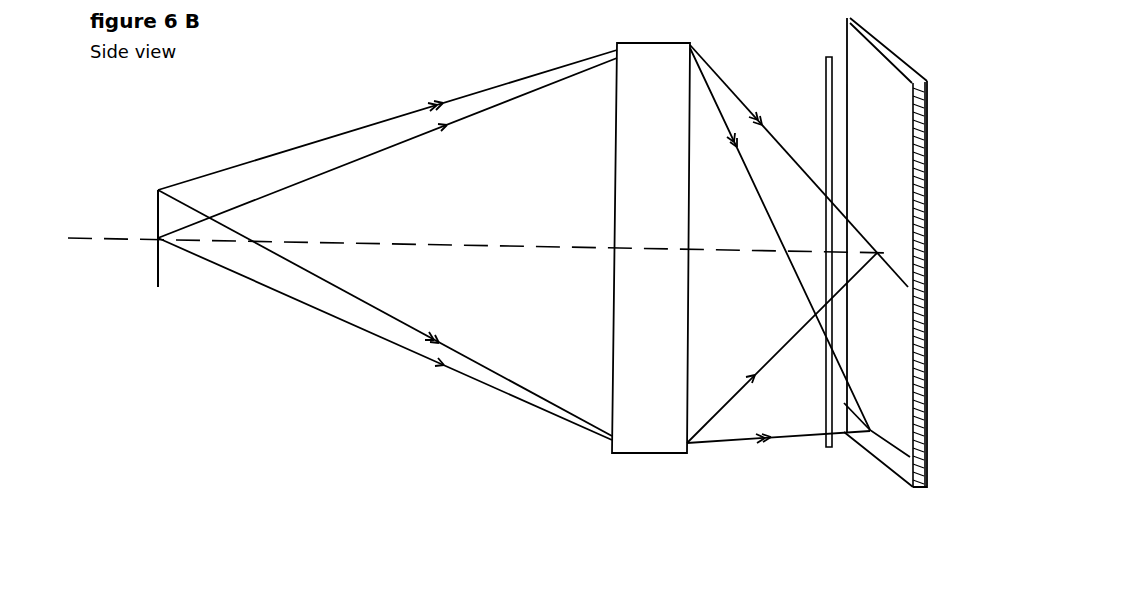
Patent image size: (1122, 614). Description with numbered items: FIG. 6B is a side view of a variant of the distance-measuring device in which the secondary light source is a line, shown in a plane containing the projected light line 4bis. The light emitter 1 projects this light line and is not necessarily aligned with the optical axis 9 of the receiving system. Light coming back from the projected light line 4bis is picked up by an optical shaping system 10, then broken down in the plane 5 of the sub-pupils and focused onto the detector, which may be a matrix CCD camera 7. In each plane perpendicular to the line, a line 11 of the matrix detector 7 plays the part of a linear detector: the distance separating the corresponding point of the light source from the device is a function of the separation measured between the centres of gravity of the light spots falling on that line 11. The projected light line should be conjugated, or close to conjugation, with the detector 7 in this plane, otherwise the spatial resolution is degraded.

The light emitter 1 is at (777, 3).
The projected light line 4bis is at (153, 213).
The plane of the sub-pupils 5 is at (814, 463).
The matrix CCD camera 7 is at (865, 467).
The optical axis 9 is at (445, 239).
The optical shaping system 10 is at (604, 110).
The line of the matrix detector 11 is at (897, 427).